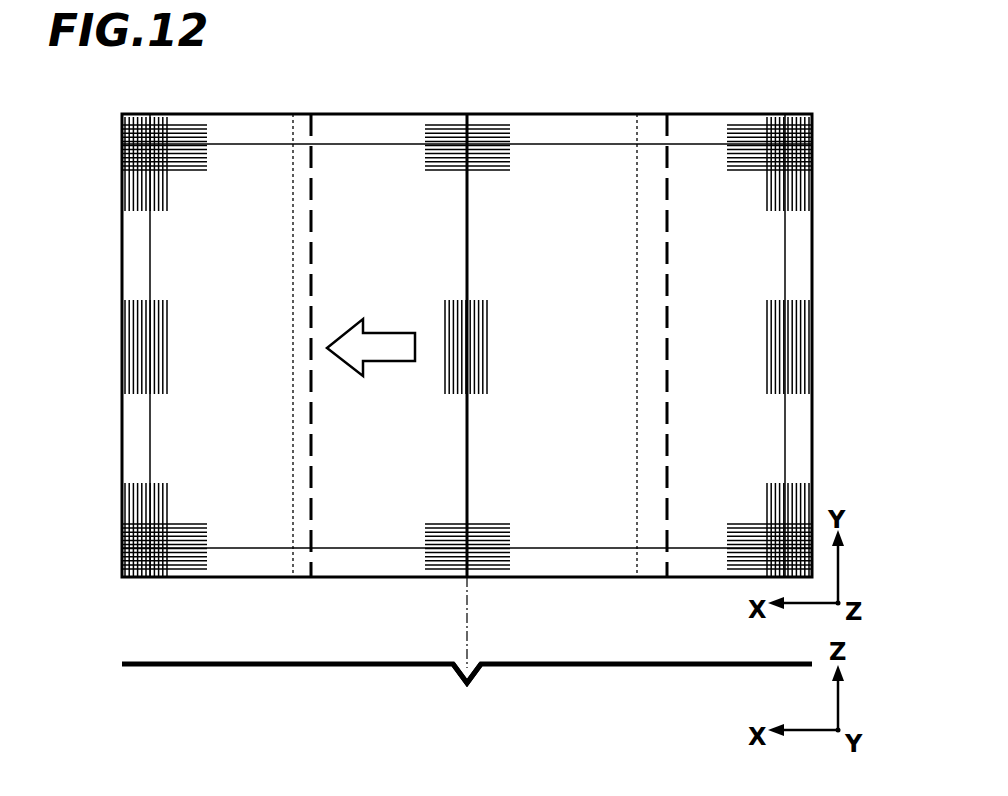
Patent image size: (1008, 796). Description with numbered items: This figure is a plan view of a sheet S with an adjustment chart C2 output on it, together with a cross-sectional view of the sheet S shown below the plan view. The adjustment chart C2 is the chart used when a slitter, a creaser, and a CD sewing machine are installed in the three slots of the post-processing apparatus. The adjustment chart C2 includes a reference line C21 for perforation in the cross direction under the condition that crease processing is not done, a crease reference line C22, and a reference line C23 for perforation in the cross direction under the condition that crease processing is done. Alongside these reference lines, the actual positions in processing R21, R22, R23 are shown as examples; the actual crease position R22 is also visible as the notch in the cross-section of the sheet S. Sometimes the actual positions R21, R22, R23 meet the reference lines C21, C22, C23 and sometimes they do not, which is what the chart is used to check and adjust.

The sheet S is at (597, 118).
The adjustment chart C2 is at (522, 130).
The reference line for perforation in the cross direction C21 is at (293, 195).
The actual position in processing R21 is at (311, 150).
The crease reference line C22 is at (467, 234).
The actual position in processing R22 is at (467, 120).
The reference line for perforation in the cross direction C23 is at (637, 528).
The actual position in processing R23 is at (667, 160).